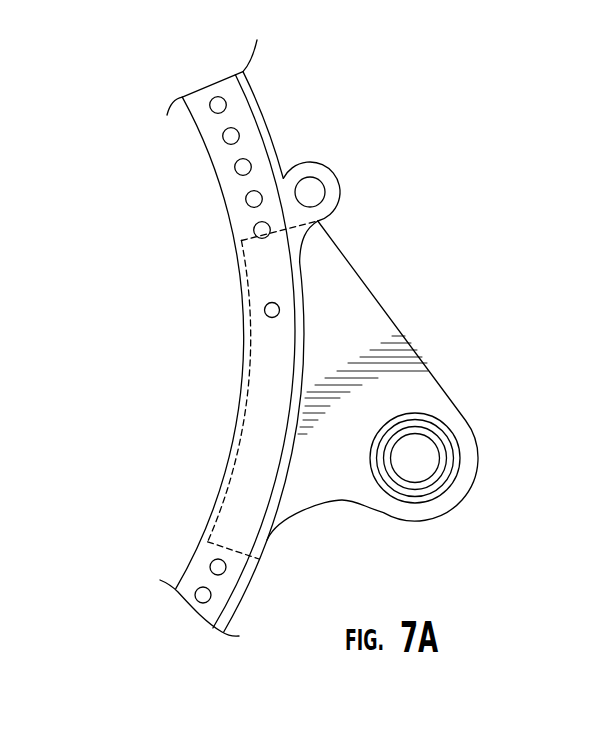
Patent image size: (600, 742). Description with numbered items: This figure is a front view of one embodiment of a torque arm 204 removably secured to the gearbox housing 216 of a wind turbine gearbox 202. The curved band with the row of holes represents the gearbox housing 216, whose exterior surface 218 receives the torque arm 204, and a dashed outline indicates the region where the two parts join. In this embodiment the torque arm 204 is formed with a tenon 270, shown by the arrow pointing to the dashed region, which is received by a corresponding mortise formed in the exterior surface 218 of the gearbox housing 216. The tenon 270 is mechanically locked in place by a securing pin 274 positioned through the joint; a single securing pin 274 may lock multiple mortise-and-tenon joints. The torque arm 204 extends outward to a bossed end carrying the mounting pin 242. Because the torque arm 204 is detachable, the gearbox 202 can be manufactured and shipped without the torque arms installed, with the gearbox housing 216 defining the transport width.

The gearbox 202 is at (157, 56).
The exterior surface 218 is at (284, 178).
The torque arm 204 is at (355, 318).
The mounting pin 242 is at (418, 456).
The securing pin 274 is at (264, 310).
The tenon 270 is at (268, 354).
The gearbox housing 216 is at (210, 568).